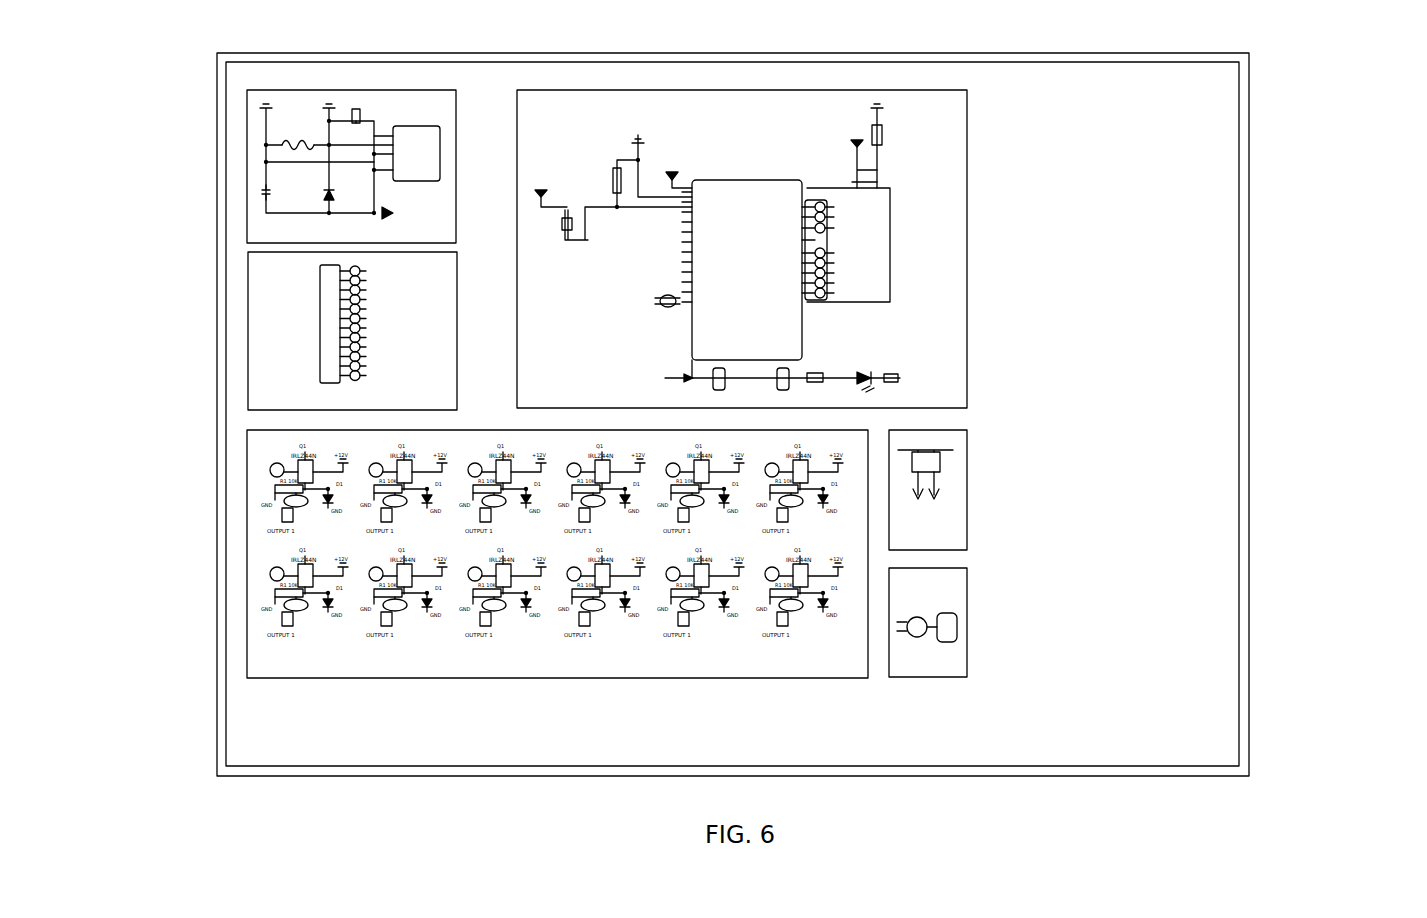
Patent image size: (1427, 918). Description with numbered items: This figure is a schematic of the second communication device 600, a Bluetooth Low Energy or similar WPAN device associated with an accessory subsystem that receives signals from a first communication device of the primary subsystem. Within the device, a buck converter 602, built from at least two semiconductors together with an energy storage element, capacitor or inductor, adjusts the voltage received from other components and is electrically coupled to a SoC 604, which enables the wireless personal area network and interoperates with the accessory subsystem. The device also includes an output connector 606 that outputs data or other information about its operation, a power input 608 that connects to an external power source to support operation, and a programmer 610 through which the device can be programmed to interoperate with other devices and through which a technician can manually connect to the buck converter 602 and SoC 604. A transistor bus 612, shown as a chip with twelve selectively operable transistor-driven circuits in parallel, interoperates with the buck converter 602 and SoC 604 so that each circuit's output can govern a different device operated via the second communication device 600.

The second communication device 600 is at (1284, 110).
The buck converter 602 is at (240, 175).
The SoC 604 is at (978, 183).
The output connector 606 is at (240, 345).
The power input 608 is at (978, 465).
The programmer 610 is at (983, 628).
The transistor bus 612 is at (240, 565).